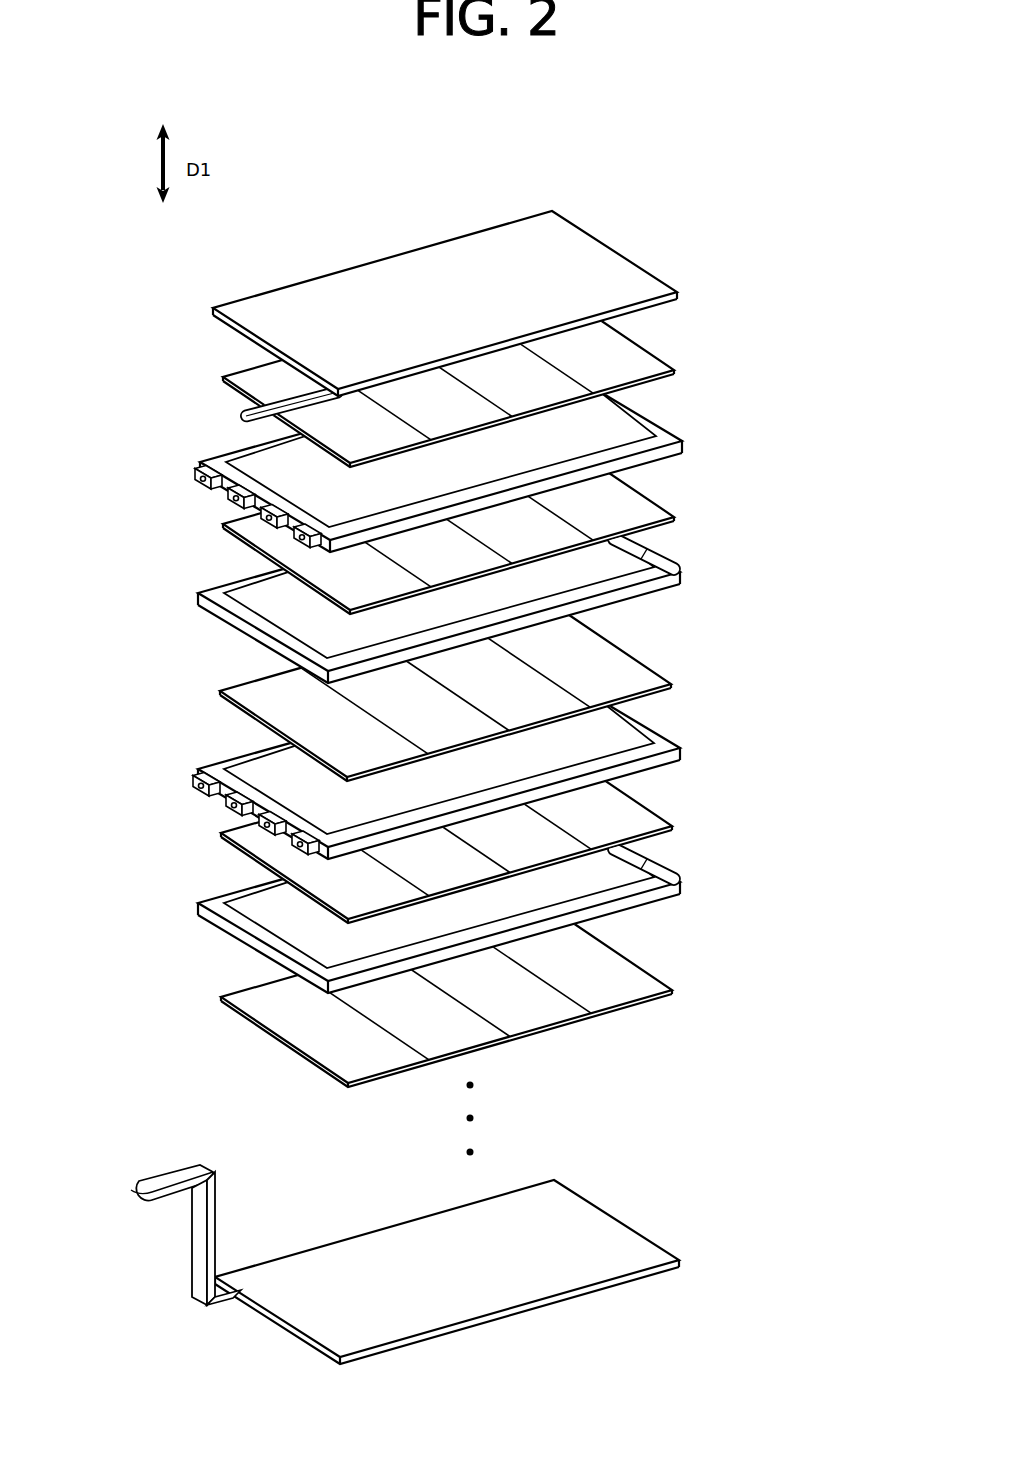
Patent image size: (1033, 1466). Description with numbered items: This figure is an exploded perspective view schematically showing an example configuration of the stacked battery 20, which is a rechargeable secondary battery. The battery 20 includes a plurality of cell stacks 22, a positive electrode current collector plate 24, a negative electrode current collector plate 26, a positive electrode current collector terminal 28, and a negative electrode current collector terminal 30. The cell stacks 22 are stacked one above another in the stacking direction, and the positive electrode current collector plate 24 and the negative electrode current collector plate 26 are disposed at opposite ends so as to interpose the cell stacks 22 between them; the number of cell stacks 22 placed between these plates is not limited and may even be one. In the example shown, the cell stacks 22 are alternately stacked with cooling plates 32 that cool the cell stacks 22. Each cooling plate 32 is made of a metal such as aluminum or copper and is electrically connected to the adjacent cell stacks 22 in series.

The stacked battery 20 is at (673, 135).
The cell stack 22 is at (685, 444).
The positive electrode current collector plate 24 is at (699, 1259).
The negative electrode current collector plate 26 is at (699, 298).
The positive electrode current collector terminal 28 is at (128, 1196).
The negative electrode current collector terminal 30 is at (238, 413).
The cooling plate 32 is at (676, 371).